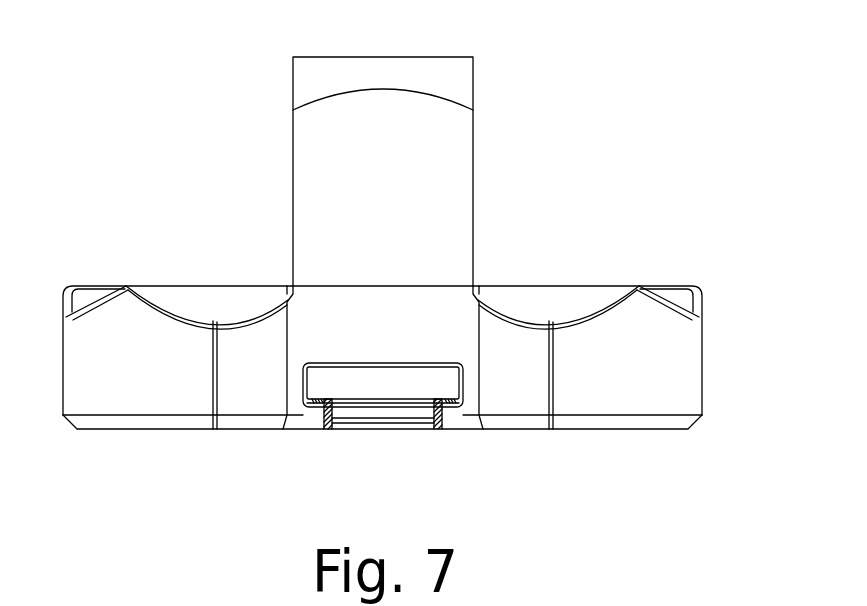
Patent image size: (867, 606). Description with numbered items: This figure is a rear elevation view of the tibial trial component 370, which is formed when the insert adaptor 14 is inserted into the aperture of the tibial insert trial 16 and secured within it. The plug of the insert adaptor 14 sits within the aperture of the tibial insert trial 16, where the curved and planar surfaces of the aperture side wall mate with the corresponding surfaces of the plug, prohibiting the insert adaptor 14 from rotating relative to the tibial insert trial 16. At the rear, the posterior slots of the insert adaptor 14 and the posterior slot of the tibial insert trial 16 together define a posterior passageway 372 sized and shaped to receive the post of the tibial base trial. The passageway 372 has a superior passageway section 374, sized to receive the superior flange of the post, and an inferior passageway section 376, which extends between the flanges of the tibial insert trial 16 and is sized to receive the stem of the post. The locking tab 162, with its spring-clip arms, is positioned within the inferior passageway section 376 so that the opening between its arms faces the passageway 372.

The tibial trial component 370 is at (382, 281).
The tibial insert trial 16 is at (535, 293).
The superior passageway section 374 is at (381, 385).
The insert adaptor 14 is at (343, 386).
The posterior passageway 372 is at (390, 426).
The inferior passageway section 376 is at (410, 430).
The locking tab 162 is at (442, 428).